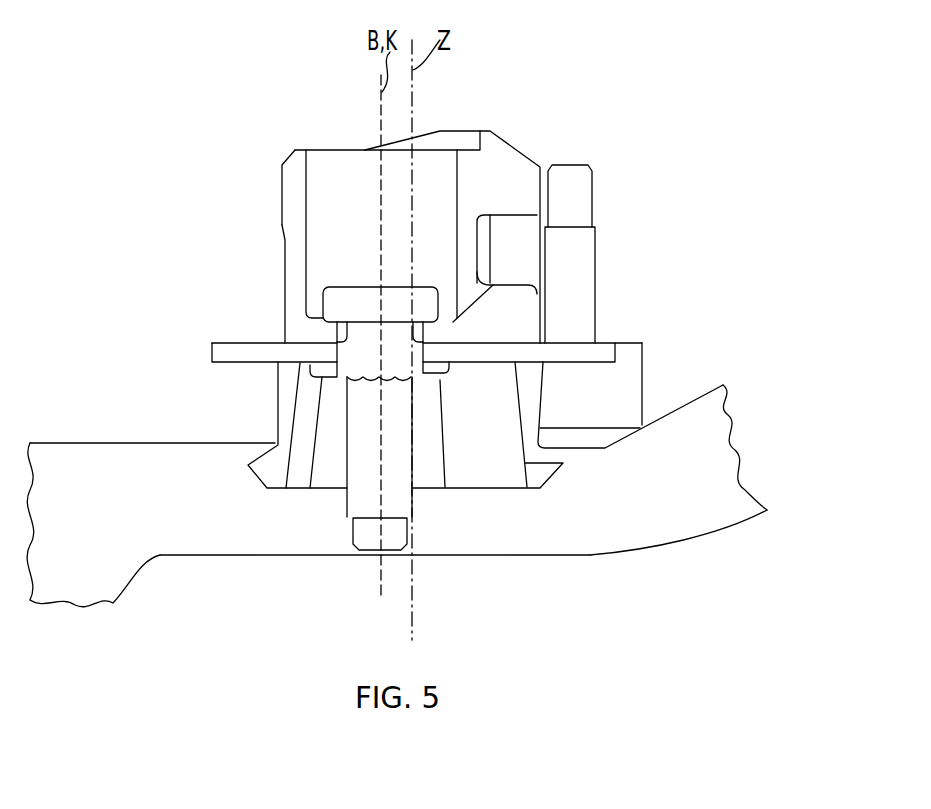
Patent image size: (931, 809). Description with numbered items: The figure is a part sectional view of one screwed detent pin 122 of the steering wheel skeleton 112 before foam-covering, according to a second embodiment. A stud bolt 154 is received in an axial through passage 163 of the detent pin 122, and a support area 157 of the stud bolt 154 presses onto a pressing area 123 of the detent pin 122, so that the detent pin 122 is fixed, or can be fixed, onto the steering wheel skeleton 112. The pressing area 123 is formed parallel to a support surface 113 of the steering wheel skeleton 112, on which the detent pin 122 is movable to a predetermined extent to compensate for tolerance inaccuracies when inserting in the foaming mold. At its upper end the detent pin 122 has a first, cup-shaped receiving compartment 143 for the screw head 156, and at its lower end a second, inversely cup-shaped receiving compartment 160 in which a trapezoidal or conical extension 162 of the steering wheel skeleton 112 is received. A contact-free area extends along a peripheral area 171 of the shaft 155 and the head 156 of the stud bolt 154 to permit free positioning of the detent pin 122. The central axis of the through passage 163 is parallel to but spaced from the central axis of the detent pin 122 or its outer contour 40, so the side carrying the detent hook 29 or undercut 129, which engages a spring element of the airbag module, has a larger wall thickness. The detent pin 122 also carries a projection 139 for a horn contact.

The outer contour 40 is at (430, 222).
The detent pin 122 is at (280, 182).
The first receiving compartment 143 is at (315, 150).
The pressing area 123 is at (493, 284).
The support area 157 is at (447, 323).
The projection 139 is at (618, 250).
The undercut 129 is at (618, 275).
The detent hook 29 is at (548, 240).
The screw head 156 is at (320, 303).
The axial through passage 163 is at (333, 333).
The shaft 155 is at (347, 433).
The stud bolt 154 is at (353, 541).
The second receiving compartment 160 is at (303, 395).
The extension 162 is at (328, 430).
The peripheral area 171 is at (420, 432).
The steering wheel skeleton 112 is at (740, 440).
The support surface 113 is at (533, 488).